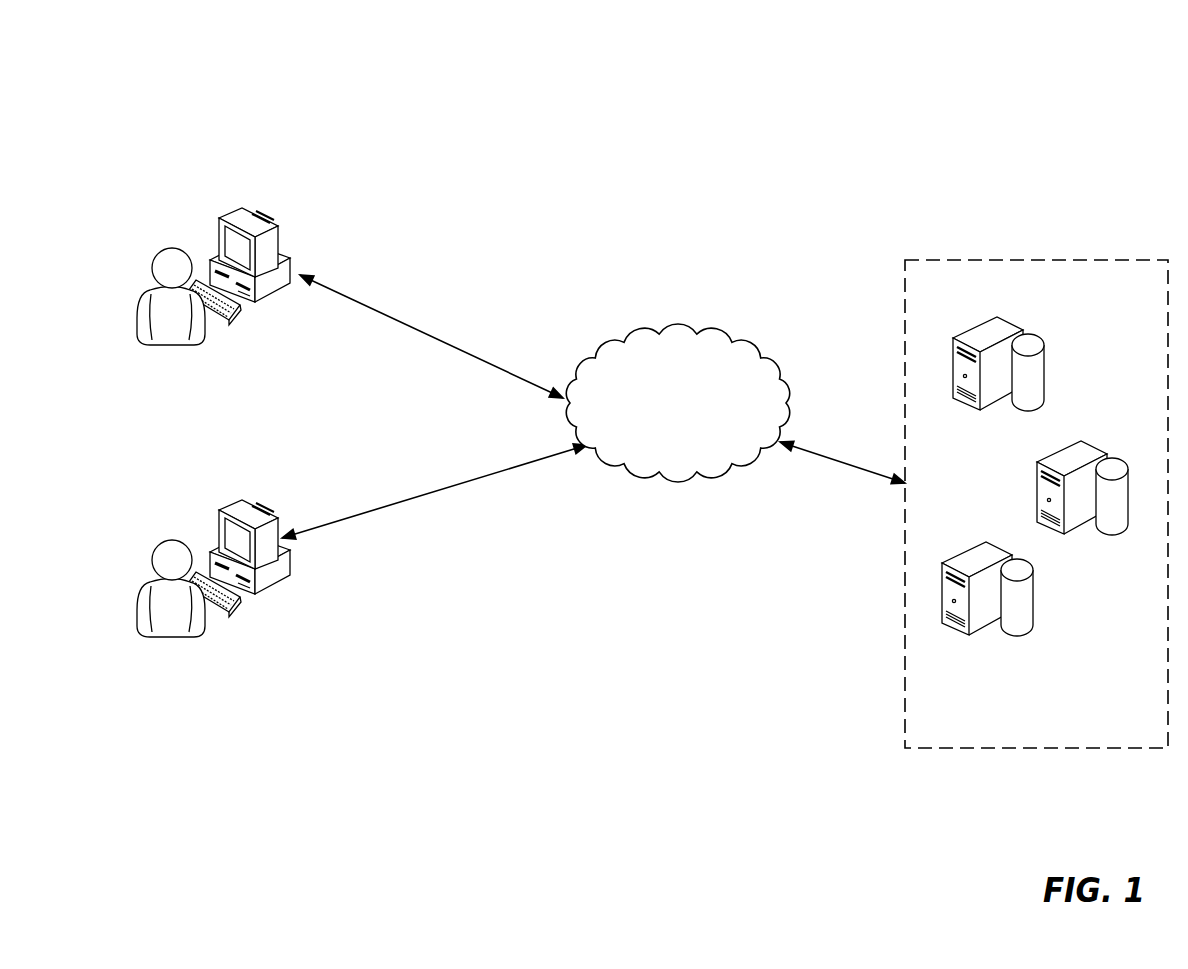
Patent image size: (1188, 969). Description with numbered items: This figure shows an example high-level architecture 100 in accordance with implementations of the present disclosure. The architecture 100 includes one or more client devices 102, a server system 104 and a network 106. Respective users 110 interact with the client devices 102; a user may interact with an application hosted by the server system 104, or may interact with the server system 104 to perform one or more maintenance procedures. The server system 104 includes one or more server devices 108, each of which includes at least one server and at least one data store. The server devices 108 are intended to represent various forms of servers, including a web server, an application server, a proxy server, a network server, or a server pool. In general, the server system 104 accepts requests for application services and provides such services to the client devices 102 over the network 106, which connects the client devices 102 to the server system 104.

The example architecture 100 is at (530, 90).
The client devices 102 is at (220, 223).
The server system 104 is at (1035, 260).
The network 106 is at (681, 333).
The server devices 108 is at (1045, 349).
The users 110 is at (170, 345).